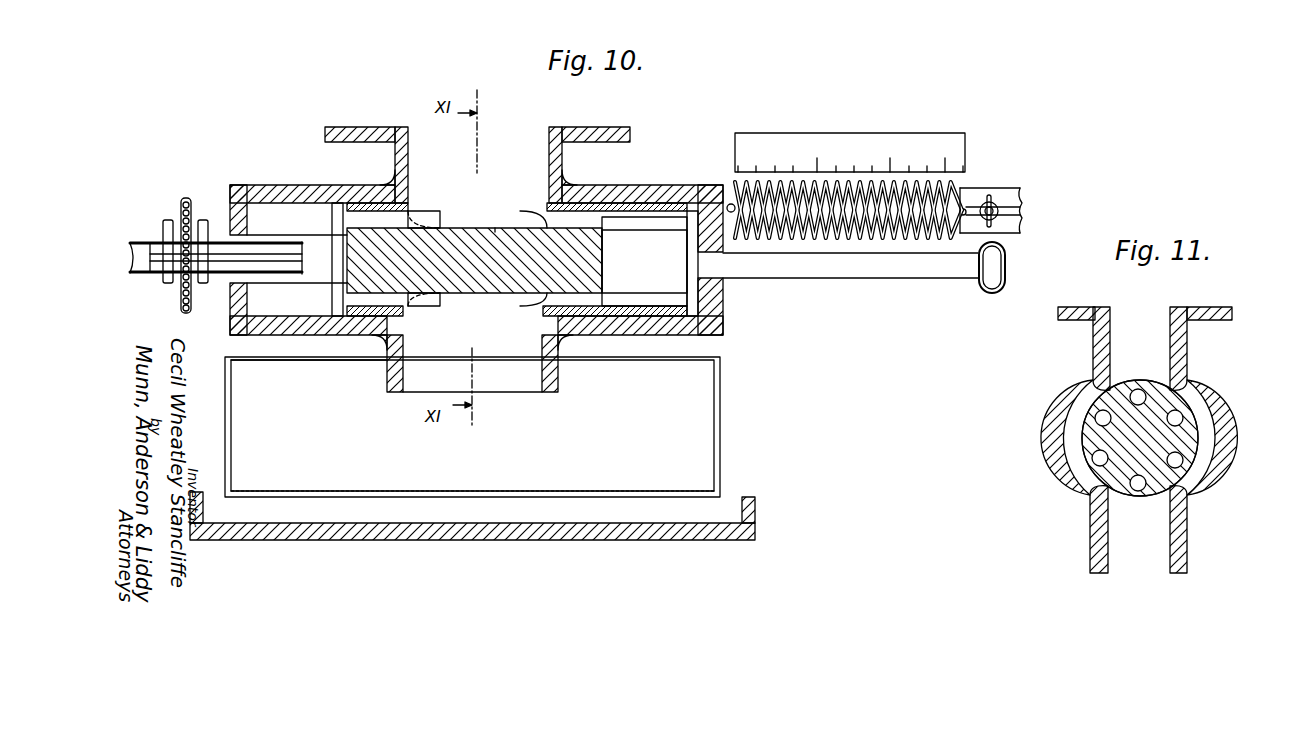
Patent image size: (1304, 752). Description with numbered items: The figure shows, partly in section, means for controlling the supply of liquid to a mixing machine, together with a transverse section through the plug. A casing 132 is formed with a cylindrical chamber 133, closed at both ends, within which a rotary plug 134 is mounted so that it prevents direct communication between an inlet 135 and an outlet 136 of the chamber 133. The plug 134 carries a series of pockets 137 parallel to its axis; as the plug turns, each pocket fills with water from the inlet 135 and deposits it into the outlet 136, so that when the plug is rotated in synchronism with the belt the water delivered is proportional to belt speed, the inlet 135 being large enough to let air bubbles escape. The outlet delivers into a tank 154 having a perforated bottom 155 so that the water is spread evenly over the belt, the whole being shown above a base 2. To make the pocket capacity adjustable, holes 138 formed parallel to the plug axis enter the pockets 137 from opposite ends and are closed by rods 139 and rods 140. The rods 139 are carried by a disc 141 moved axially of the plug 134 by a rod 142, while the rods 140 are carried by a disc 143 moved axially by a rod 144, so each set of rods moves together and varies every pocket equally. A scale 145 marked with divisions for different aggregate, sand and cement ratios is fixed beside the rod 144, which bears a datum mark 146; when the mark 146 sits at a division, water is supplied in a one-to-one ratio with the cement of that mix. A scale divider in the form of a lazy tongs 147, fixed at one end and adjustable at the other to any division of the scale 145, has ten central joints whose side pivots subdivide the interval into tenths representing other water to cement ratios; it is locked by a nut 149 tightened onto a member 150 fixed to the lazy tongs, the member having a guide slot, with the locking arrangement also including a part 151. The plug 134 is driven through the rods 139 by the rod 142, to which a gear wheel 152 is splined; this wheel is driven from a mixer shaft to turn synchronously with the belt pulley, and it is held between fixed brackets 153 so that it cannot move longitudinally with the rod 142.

In FIG. 10, the base tray 2 is at (430, 518).
In FIG. 10, the casing 132 is at (641, 198).
In FIG. 10, the cylindrical chamber 133 is at (665, 317).
In FIG. 10, the rotary plug 134 is at (562, 273).
In FIG. 11, the rotary plug 134 is at (1157, 442).
In FIG. 10, the inlet 135 is at (512, 148).
In FIG. 11, the inlet 135 is at (1153, 323).
In FIG. 10, the outlet 136 is at (515, 373).
In FIG. 11, the outlet 136 is at (1140, 547).
In FIG. 10, the pockets 137 is at (495, 298).
In FIG. 11, the pockets 137 is at (1143, 492).
In FIG. 10, the holes 138 is at (550, 217).
In FIG. 11, the holes 138 is at (1102, 417).
In FIG. 10, the rods 139 is at (430, 220).
In FIG. 10, the rods 140 is at (653, 218).
In FIG. 10, the disc 141 is at (337, 221).
In FIG. 10, the rod 142 is at (157, 257).
In FIG. 10, the disc 143 is at (692, 215).
In FIG. 10, the rod 144 is at (787, 263).
In FIG. 10, the scale 145 is at (858, 157).
In FIG. 10, the datum mark 146 is at (953, 258).
In FIG. 10, the lazy tongs 147 is at (958, 197).
In FIG. 10, the nut 149 is at (995, 217).
In FIG. 10, the member 150 is at (1002, 202).
In FIG. 10, the adjusting screw 151 is at (1003, 212).
In FIG. 10, the gear wheel 152 is at (187, 198).
In FIG. 10, the fixed brackets 153 is at (168, 220).
In FIG. 10, the tank 154 is at (720, 448).
In FIG. 10, the perforated bottom 155 is at (537, 492).